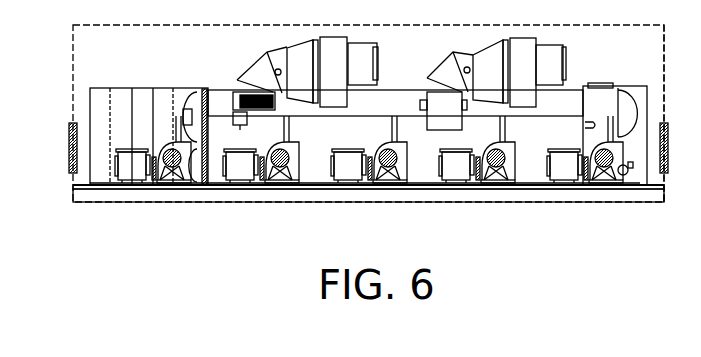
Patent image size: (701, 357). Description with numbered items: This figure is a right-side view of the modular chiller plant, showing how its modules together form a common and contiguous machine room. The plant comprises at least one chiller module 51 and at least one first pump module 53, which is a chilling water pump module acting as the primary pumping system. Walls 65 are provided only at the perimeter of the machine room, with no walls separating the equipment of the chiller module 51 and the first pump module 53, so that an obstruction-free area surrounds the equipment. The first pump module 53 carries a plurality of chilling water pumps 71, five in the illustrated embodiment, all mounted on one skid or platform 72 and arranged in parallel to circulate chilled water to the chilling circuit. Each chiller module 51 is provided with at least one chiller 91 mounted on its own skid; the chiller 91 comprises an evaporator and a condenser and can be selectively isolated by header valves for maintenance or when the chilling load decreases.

The chiller module 51 is at (243, 193).
The first pump module 53 is at (547, 185).
The walls 65 is at (664, 63).
The chilling water pumps 71 is at (495, 188).
The skid or platform 72 is at (322, 187).
The chiller 91 is at (387, 100).